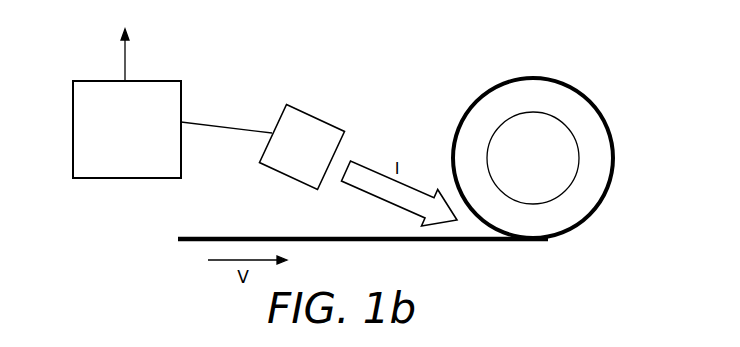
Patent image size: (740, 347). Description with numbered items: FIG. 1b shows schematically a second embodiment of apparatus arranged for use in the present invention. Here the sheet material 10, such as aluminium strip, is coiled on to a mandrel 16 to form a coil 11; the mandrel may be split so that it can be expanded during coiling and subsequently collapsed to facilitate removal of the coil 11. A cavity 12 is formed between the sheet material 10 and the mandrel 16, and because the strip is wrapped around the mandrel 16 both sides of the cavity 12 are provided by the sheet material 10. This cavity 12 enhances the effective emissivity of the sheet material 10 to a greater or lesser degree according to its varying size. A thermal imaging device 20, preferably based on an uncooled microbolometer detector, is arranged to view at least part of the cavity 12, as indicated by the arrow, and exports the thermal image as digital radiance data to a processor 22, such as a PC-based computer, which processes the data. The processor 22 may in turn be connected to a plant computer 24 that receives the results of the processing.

The sheet material 10 is at (193, 236).
The coil 11 is at (565, 103).
The cavity 12 is at (475, 225).
The mandrel 16 is at (522, 168).
The thermal imaging device 20 is at (315, 157).
The processor 22 is at (114, 140).
The plant computer 24 is at (125, 42).